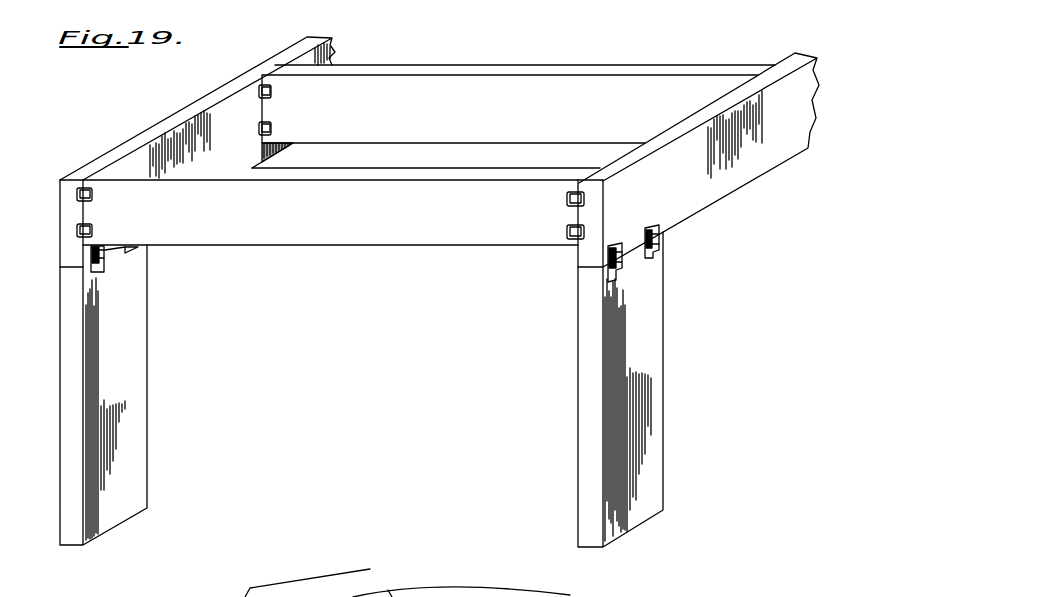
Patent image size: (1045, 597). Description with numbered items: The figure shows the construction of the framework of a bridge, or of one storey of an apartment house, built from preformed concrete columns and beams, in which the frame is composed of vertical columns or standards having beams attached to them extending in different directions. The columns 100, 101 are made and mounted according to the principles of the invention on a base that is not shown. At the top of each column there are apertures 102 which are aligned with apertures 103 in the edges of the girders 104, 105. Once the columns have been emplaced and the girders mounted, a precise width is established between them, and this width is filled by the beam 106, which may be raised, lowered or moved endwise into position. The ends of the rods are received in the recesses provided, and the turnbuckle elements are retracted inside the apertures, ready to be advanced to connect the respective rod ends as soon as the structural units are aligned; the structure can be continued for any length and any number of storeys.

The column 100 is at (148, 373).
The column 101 is at (592, 392).
The apertures 102 is at (103, 272).
The apertures 103 is at (103, 245).
The girder 104 is at (158, 128).
The girder 105 is at (745, 182).
The beam 106 is at (367, 244).